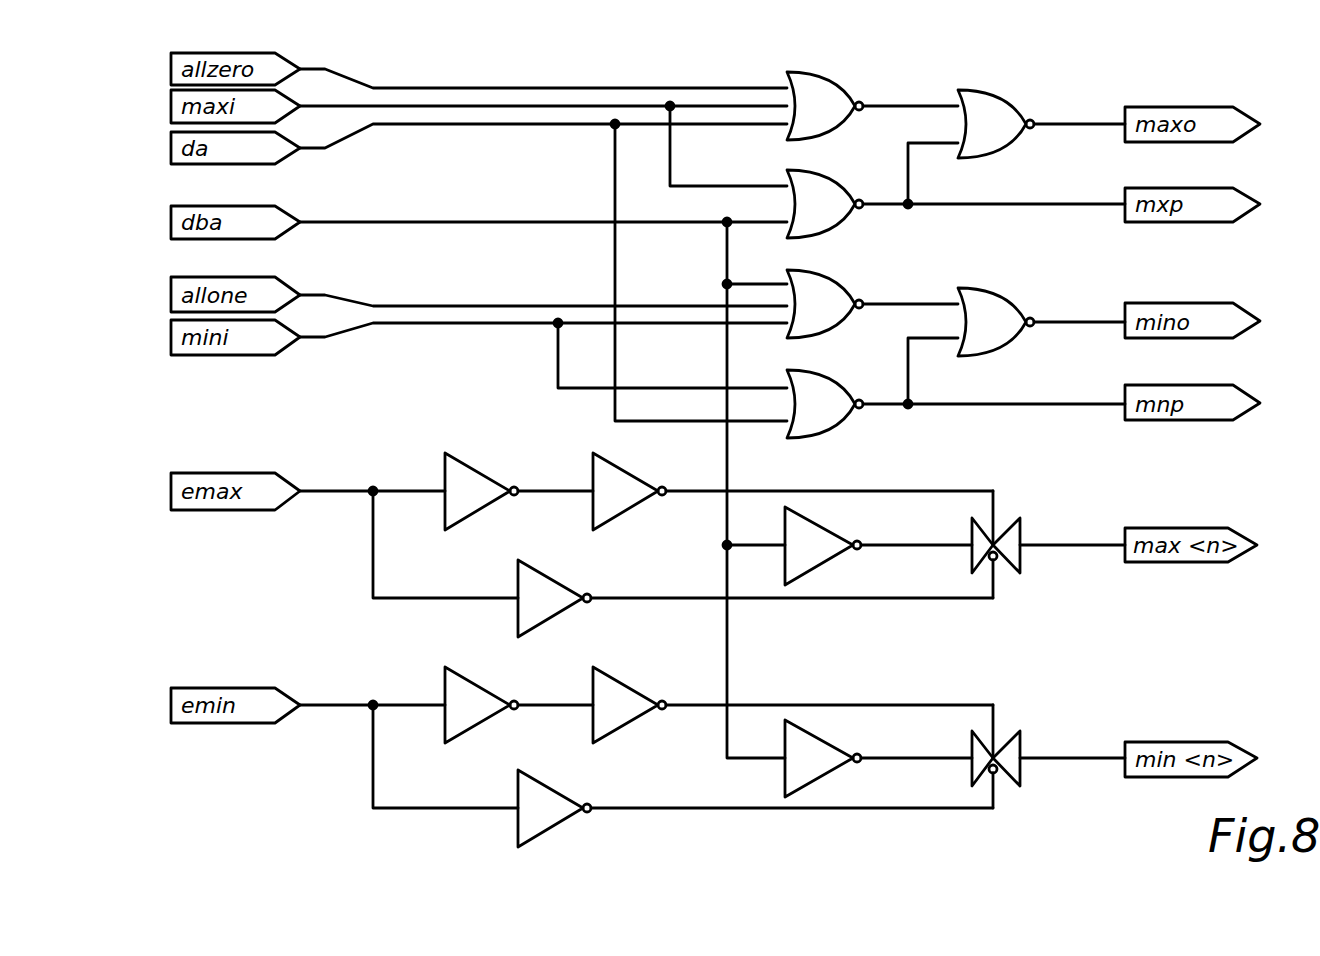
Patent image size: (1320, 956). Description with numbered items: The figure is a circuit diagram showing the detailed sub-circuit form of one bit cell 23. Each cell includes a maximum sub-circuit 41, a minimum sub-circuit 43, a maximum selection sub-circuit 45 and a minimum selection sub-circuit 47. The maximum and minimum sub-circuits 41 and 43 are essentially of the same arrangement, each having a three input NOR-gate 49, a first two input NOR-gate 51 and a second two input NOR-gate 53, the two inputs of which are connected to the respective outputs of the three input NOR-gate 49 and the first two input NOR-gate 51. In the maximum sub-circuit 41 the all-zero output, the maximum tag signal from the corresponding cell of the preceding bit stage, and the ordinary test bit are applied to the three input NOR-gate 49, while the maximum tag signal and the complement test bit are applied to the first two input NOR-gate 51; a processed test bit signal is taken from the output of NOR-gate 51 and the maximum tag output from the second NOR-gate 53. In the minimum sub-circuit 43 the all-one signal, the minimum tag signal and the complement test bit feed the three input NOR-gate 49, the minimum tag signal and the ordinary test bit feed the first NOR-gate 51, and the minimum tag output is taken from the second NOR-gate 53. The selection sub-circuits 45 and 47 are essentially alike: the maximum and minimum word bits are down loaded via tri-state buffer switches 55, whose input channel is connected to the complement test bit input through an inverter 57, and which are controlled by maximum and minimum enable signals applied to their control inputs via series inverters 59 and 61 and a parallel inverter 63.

The bit cell 23 is at (480, 389).
The maximum sub-circuit 41 is at (990, 198).
The minimum sub-circuit 43 is at (990, 395).
The maximum selection sub-circuit 45 is at (682, 563).
The minimum selection sub-circuit 47 is at (683, 780).
The three input NOR-gate 49 is at (823, 95).
The first two input NOR-gate 51 is at (823, 189).
The second two input NOR-gate 53 is at (994, 105).
The tri-state buffer switch 55 is at (1030, 539).
The inverter 57 is at (825, 543).
The series inverter 59 is at (468, 477).
The series inverter 61 is at (620, 476).
The parallel inverter 63 is at (541, 585).